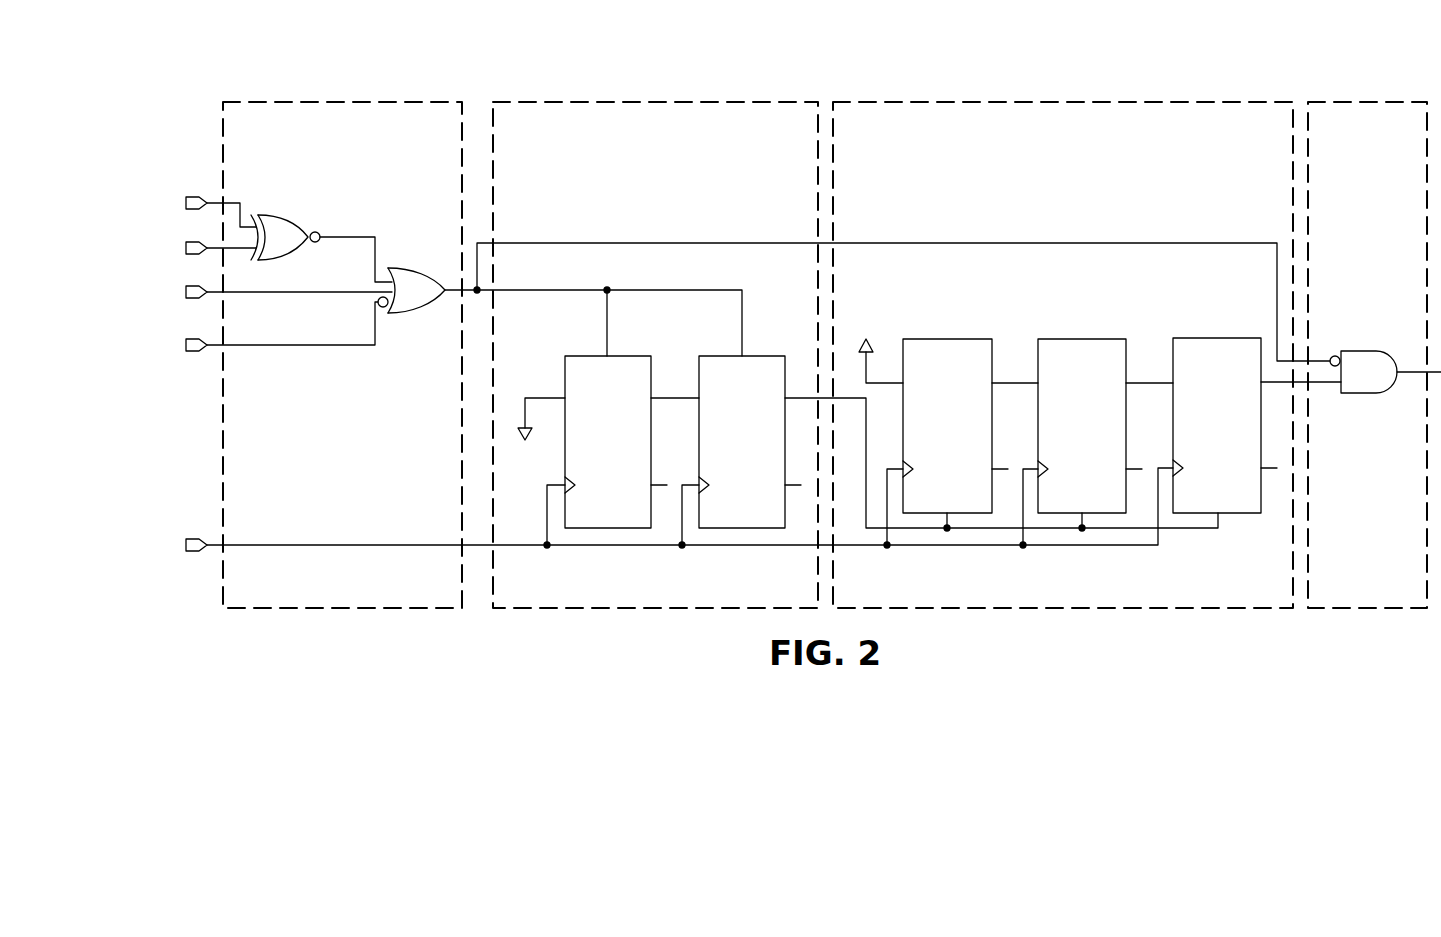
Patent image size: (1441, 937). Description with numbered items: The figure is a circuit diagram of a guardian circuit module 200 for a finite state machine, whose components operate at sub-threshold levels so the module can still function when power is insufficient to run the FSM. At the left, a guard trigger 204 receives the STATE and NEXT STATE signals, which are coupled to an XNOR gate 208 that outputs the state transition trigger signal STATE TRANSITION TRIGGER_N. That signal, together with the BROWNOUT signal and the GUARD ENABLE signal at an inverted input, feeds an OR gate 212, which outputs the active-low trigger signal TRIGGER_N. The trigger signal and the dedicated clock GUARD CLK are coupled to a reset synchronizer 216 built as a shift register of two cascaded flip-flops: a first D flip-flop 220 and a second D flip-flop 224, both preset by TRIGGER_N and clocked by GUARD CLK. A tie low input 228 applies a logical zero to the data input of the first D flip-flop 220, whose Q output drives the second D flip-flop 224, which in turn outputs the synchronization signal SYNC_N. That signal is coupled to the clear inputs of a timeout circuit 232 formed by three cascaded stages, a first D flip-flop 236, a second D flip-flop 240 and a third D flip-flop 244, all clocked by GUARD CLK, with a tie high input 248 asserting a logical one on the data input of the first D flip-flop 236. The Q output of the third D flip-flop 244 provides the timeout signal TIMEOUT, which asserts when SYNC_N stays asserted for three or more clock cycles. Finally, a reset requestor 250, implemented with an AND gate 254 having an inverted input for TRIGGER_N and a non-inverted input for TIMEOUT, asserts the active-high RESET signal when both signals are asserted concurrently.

The guardian circuit module 200 is at (750, 52).
The guard trigger 204 is at (301, 93).
The XNOR gate 208 is at (279, 212).
The OR gate 212 is at (412, 315).
The reset synchronizer 216 is at (601, 93).
The first D flip-flop 220 is at (586, 354).
The second D flip-flop 224 is at (720, 354).
The tie low input 228 is at (530, 446).
The timeout circuit 232 is at (1102, 93).
The first D flip-flop 236 is at (960, 337).
The second D flip-flop 240 is at (1095, 337).
The third D flip-flop 244 is at (1230, 337).
The tie high input 248 is at (864, 337).
The reset requestor 250 is at (1395, 93).
The AND gate 254 is at (1363, 396).